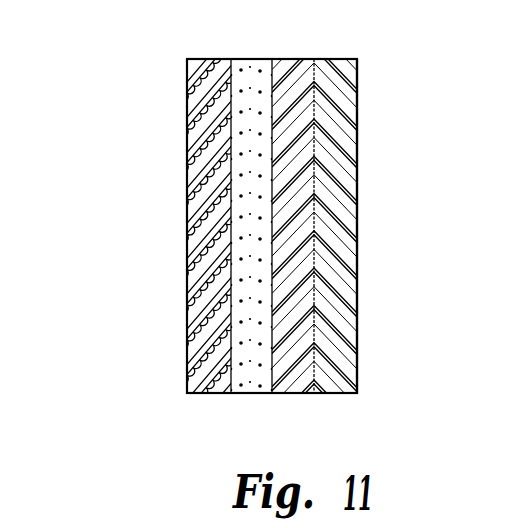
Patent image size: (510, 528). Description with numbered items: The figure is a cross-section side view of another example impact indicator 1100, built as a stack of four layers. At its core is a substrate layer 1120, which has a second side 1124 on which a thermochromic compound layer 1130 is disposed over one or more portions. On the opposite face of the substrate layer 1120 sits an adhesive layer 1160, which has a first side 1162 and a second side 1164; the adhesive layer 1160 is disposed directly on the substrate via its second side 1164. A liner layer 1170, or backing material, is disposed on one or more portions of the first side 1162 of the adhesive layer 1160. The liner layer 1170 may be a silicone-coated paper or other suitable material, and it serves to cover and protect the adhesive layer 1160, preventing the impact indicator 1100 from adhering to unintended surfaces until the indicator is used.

The impact indicator 1100 is at (160, 108).
The substrate layer 1120 is at (291, 68).
The second side 1124 is at (319, 67).
The thermochromic compound layer 1130 is at (334, 395).
The adhesive layer 1160 is at (251, 378).
The first side 1162 is at (230, 355).
The second side 1164 is at (272, 80).
The liner layer 1170 is at (203, 280).